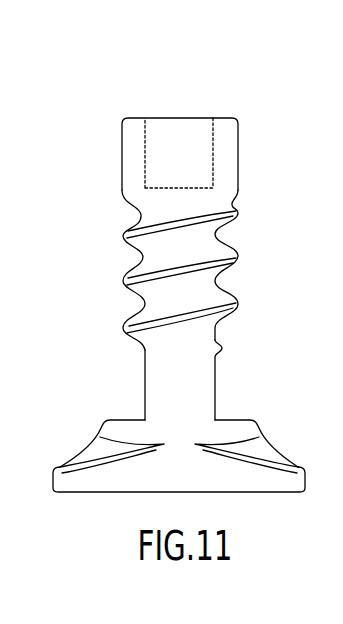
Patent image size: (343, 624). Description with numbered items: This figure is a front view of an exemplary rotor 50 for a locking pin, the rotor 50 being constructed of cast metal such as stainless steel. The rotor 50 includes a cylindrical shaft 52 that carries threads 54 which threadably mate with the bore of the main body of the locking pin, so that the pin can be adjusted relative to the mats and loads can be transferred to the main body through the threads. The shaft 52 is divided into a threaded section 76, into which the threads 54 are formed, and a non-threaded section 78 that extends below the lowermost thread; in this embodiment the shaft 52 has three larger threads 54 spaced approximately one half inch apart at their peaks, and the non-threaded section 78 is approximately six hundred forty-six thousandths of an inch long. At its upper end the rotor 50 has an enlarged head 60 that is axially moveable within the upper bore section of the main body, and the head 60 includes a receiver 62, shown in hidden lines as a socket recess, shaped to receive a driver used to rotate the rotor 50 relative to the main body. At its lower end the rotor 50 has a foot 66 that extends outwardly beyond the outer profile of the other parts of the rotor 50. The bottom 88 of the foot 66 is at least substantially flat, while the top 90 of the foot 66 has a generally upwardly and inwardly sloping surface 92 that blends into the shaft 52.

The rotor 50 is at (169, 290).
The shaft 52 is at (170, 370).
The threads 54 is at (238, 300).
The head 60 is at (210, 129).
The receiver 62 is at (213, 148).
The foot 66 is at (153, 423).
The threaded section 76 is at (214, 268).
The non-threaded section 78 is at (145, 387).
The bottom 88 is at (264, 493).
The top 90 is at (243, 416).
The sloping surface 92 is at (107, 420).